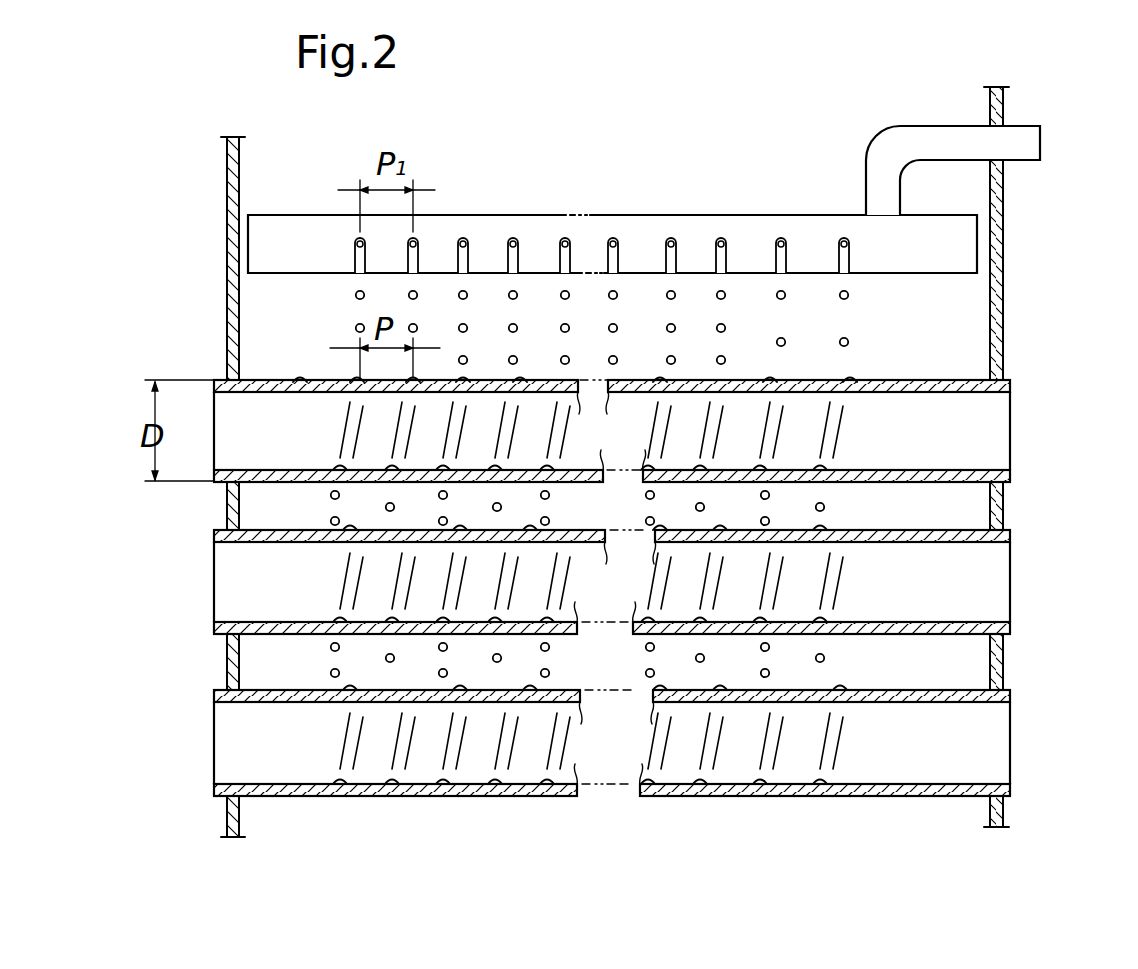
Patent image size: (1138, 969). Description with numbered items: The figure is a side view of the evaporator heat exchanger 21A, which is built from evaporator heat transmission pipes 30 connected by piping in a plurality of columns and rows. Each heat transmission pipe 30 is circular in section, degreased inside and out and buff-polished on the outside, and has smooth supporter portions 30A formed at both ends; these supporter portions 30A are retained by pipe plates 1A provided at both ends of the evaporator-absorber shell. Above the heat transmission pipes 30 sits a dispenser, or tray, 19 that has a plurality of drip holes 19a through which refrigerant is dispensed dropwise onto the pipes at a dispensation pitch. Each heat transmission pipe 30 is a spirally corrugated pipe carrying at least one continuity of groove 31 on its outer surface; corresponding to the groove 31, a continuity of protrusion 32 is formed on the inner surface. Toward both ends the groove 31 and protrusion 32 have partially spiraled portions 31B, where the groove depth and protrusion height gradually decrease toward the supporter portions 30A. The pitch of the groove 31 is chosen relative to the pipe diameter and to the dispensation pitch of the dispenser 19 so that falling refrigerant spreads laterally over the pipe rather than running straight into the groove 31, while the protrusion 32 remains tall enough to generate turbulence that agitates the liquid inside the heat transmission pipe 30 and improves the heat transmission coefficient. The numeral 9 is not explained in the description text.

The pipe plate 1A is at (228, 183).
The header box 9 is at (248, 235).
The dispenser (tray) 19 is at (802, 215).
The drip hole 19a is at (721, 240).
The evaporator heat exchanger 21A is at (540, 368).
The evaporator heat transmission pipe 30 is at (245, 380).
The supporter portion 30A is at (283, 380).
The continuity of groove 31 is at (905, 380).
The partially spiraled portion 31B is at (895, 380).
The continuity of protrusion 32 is at (848, 392).